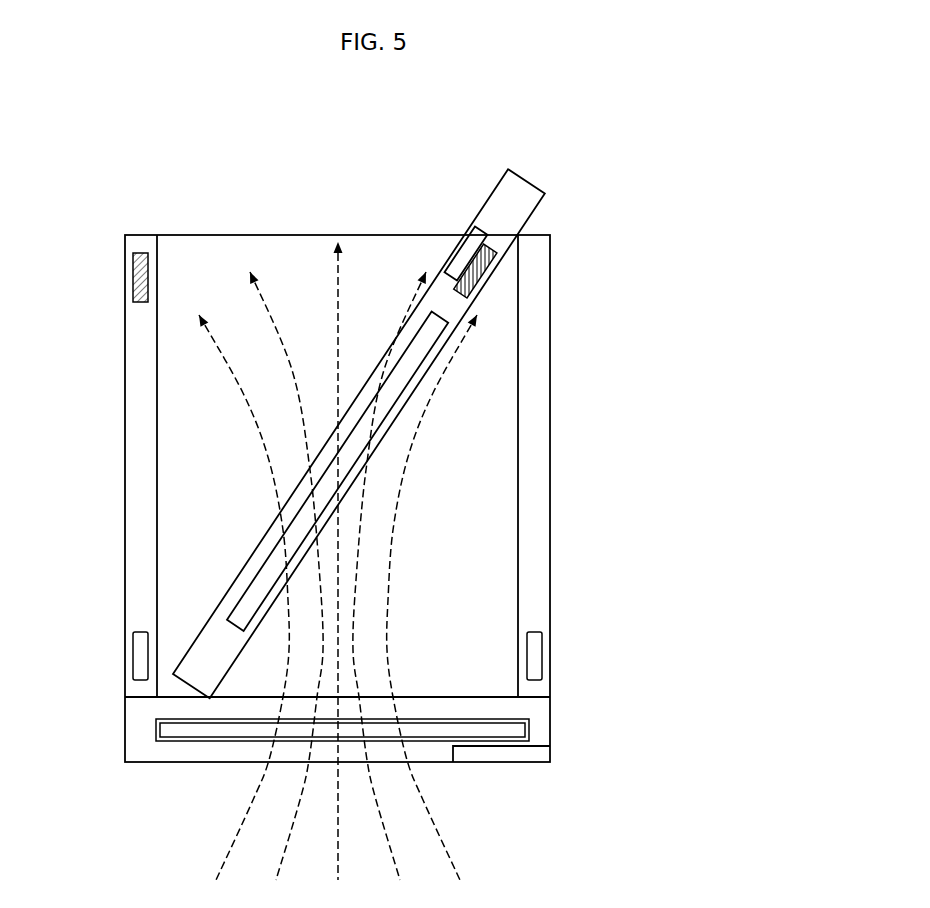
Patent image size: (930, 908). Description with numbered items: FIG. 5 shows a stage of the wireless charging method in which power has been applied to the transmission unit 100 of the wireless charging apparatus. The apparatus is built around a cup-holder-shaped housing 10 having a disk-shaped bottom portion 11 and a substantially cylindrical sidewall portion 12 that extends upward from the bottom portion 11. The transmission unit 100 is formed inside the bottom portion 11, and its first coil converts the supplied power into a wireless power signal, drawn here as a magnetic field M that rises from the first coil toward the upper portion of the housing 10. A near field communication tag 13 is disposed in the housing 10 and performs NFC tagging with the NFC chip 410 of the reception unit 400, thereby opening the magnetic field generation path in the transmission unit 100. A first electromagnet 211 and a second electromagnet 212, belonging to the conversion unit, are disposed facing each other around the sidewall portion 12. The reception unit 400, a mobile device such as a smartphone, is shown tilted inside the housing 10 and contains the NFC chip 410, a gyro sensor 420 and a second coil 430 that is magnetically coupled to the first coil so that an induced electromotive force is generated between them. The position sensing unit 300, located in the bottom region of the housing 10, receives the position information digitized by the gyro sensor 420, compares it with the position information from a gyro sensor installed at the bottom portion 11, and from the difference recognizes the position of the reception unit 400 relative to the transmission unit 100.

The housing 10 is at (650, 584).
The bottom portion 11 is at (538, 708).
The sidewall portion 12 is at (538, 593).
The near field communication tag 13 is at (133, 276).
The transmission unit 100 is at (529, 729).
The first electromagnet 211 is at (527, 655).
The second electromagnet 212 is at (140, 656).
The position sensing unit 300 is at (540, 758).
The reception unit 400 is at (522, 192).
The near field communication chip 410 is at (507, 255).
The gyro sensor 420 is at (472, 230).
The second coil 430 is at (430, 353).
The magnetic field M is at (408, 457).